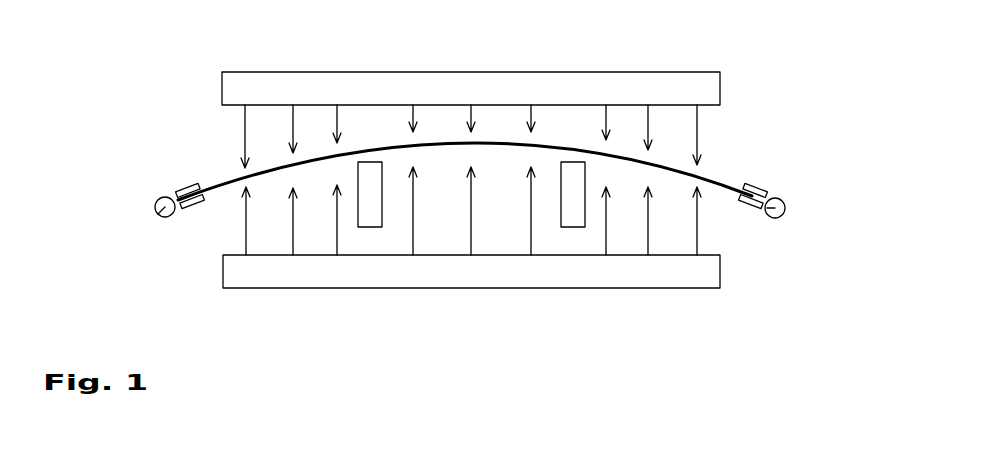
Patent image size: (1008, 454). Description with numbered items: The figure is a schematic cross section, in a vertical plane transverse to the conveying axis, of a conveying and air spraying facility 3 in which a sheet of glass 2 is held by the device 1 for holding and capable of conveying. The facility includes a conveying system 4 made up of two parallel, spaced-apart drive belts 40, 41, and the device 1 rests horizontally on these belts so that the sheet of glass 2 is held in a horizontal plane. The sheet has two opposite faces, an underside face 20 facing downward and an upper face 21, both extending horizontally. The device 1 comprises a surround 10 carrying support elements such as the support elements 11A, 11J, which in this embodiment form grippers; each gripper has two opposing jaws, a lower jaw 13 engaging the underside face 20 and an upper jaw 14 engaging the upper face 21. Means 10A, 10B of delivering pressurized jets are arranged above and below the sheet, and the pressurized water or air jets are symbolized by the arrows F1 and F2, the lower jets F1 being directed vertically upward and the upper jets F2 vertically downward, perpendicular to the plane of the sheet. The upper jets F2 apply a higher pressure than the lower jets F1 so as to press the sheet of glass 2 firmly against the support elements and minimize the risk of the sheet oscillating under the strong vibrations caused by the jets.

The device for holding and capable of conveying 1 is at (142, 205).
The sheet of glass 2 is at (218, 198).
The conveying and air spraying facility 3 is at (834, 103).
The conveying system 4 is at (390, 218).
The surround 10 is at (158, 216).
The means of delivering pressurized jets 10A is at (330, 93).
The means of delivering pressurized jets 10B is at (278, 263).
The support element 11A is at (152, 193).
The support element 11J is at (752, 185).
The lower jaw 13 is at (193, 214).
The upper jaw 14 is at (188, 189).
The underside face 20 is at (315, 162).
The upper face 21 is at (275, 166).
The drive belt 40 is at (372, 216).
The drive belt 41 is at (570, 215).
The lower jets F1 is at (648, 243).
The upper jets F2 is at (648, 118).